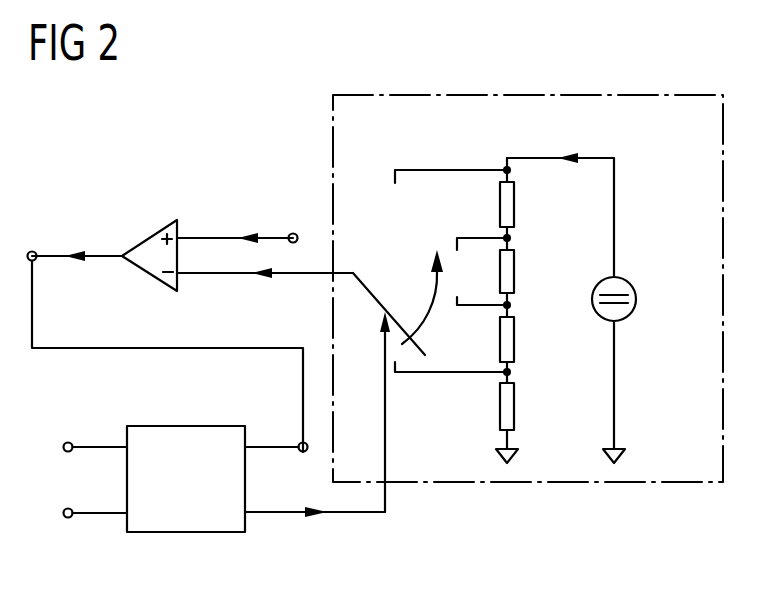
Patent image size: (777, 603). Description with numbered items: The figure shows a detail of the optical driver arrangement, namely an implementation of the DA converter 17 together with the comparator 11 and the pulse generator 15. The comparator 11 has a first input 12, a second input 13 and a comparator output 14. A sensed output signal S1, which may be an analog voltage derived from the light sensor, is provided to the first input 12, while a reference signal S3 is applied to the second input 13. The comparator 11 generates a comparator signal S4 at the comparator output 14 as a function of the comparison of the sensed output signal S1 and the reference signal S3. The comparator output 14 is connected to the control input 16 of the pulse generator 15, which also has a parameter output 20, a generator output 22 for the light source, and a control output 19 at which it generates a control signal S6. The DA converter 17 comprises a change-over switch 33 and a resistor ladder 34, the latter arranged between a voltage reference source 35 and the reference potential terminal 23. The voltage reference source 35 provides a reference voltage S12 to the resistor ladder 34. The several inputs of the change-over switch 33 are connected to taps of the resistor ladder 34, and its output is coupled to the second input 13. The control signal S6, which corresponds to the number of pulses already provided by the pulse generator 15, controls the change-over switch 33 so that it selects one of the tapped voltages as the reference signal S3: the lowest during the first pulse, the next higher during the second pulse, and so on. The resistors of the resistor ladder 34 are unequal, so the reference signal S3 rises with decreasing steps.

The comparator 11 is at (152, 236).
The first input 12 is at (182, 233).
The second input 13 is at (180, 276).
The comparator output 14 is at (117, 263).
The pulse generator 15 is at (186, 425).
The control input 16 is at (249, 441).
The DA converter 17 is at (528, 94).
The control output 19 is at (248, 518).
The parameter output 20 is at (124, 518).
The generator output 22 is at (124, 441).
The reference potential terminal 23 is at (603, 455).
The change-over switch 33 is at (375, 289).
The resistor ladder 34 is at (527, 149).
The voltage reference source 35 is at (636, 299).
The sensed output signal S1 is at (266, 221).
The reference signal S3 is at (260, 293).
The comparator signal S4 is at (166, 351).
The control signal S6 is at (345, 434).
The reference voltage S12 is at (560, 215).